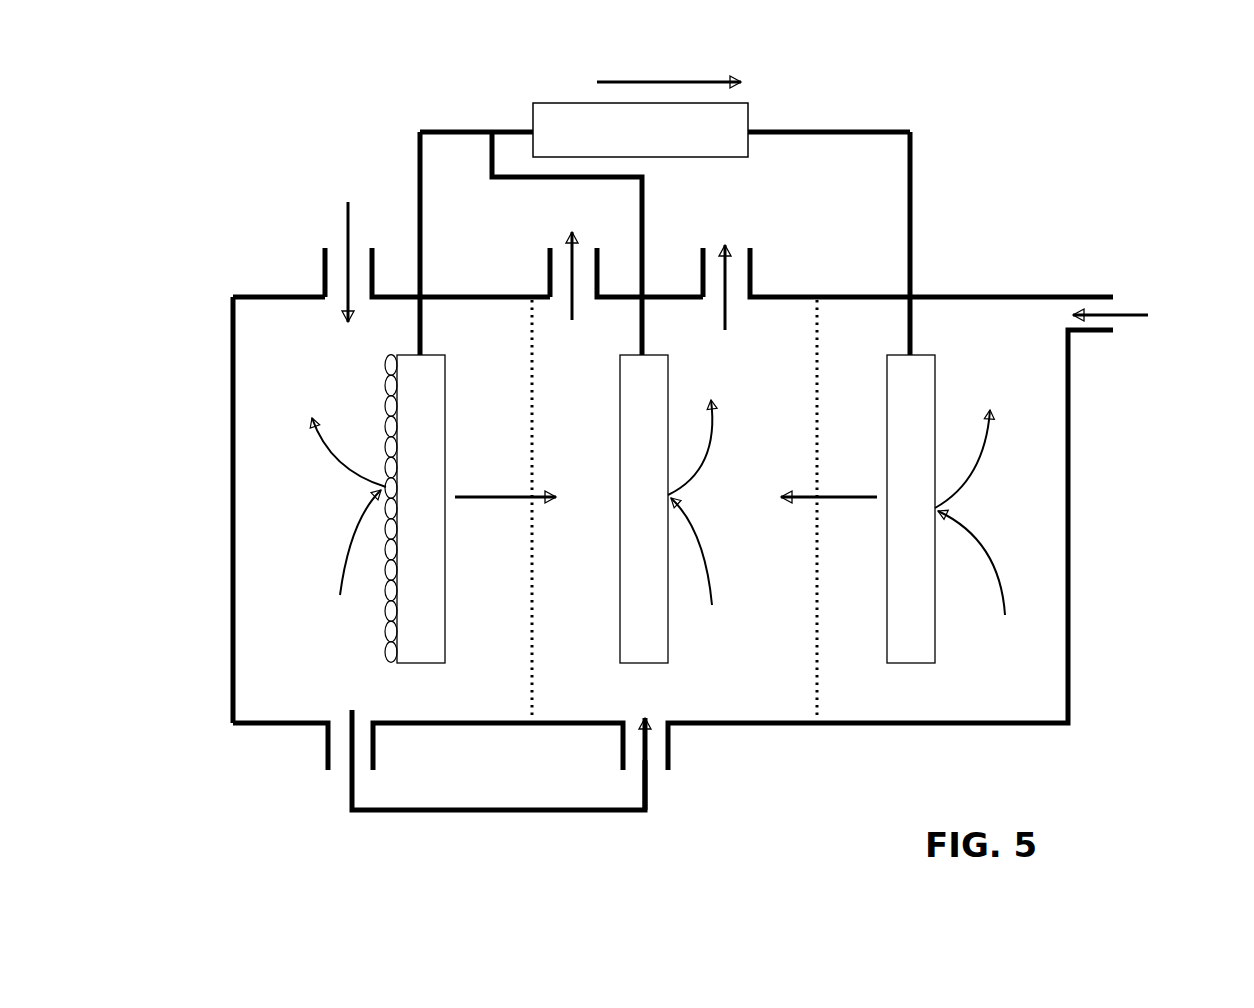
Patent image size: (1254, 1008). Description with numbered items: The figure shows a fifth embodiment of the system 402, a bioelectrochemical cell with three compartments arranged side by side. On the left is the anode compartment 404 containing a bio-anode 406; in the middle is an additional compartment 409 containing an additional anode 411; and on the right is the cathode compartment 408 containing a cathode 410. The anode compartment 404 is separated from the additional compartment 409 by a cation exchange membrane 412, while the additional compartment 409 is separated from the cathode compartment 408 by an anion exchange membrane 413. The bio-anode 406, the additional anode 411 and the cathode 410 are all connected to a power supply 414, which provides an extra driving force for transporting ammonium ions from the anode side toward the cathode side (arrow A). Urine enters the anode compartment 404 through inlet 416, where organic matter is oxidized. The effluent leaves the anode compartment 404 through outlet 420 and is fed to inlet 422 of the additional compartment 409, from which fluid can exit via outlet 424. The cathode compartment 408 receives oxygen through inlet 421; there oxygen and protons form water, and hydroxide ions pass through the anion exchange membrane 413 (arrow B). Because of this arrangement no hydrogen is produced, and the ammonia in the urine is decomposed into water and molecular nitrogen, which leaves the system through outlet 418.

The system 402 is at (1080, 582).
The anode compartment 404 is at (253, 475).
The bio-anode 406 is at (440, 437).
The cathode compartment 408 is at (1040, 694).
The additional compartment 409 is at (773, 712).
The cathode 410 is at (895, 540).
The additional anode 411 is at (642, 457).
The cation exchange membrane 412 is at (534, 329).
The anion exchange membrane 413 is at (820, 378).
The power supply 414 is at (546, 118).
The inlet 416 is at (337, 265).
The outlet 418 is at (742, 272).
The outlet of the anode compartment 420 is at (342, 770).
The inlet for O2 supply 421 is at (1100, 335).
The inlet of the additional compartment 422 is at (660, 768).
The outlet 424 is at (559, 277).